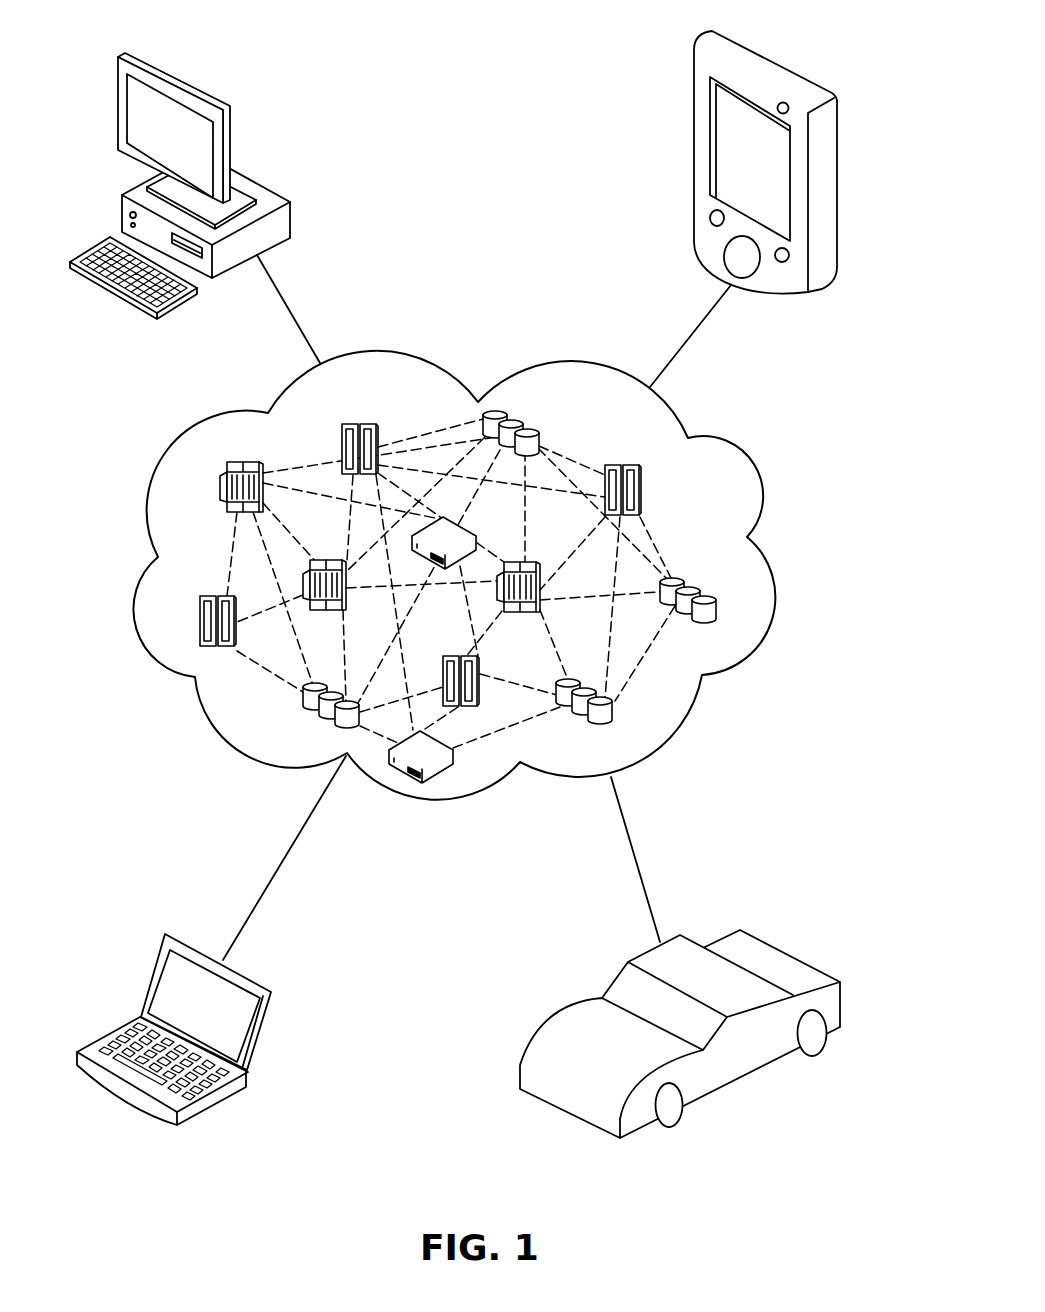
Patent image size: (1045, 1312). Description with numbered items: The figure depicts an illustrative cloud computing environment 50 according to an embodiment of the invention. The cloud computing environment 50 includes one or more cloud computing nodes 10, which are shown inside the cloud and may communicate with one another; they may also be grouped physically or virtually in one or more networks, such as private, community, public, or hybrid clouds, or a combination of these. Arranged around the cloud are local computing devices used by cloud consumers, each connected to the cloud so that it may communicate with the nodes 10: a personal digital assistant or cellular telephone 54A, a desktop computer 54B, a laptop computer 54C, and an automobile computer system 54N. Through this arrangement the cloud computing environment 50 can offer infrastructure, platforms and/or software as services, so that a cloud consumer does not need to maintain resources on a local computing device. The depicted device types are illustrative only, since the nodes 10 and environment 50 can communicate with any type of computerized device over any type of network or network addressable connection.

The cloud computing nodes 10 is at (689, 513).
The cloud computing environment 50 is at (747, 657).
The personal digital assistant (PDA) or cellular telephone 54A is at (690, 110).
The desktop computer 54B is at (293, 213).
The laptop computer 54C is at (275, 1002).
The automobile computer system 54N is at (842, 1000).